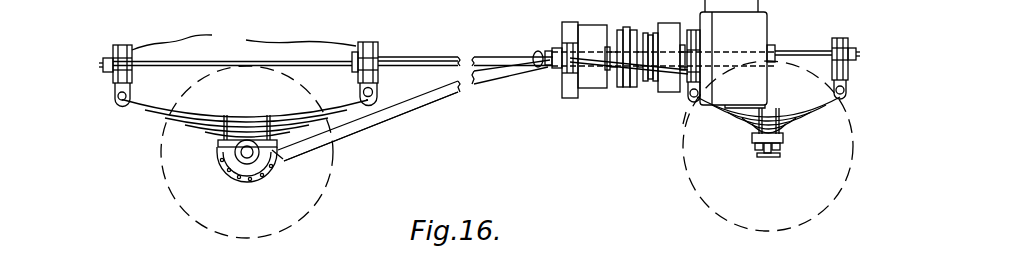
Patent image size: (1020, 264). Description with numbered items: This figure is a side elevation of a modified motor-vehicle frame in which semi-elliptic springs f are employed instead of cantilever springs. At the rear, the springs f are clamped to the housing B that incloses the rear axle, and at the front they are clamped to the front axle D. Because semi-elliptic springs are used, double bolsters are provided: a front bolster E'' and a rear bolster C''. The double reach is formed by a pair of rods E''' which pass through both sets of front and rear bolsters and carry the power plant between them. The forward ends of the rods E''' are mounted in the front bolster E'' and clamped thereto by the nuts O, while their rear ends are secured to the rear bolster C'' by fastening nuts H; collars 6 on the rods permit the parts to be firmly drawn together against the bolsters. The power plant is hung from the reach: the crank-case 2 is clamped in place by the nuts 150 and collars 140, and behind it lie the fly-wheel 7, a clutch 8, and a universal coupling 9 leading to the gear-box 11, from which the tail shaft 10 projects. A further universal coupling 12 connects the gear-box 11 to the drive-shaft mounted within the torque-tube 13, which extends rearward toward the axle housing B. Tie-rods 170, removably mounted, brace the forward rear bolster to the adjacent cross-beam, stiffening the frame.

The nuts H is at (352, 73).
The rear bolster C'' is at (244, 38).
The collars 6 is at (380, 50).
The reach rods E''' is at (465, 44).
The universal coupling 12 is at (536, 50).
The torque-tube 13 is at (388, 112).
The tie-rods 170 is at (420, 66).
The housing B is at (217, 160).
The semi-elliptic springs f is at (232, 112).
The front axle D is at (783, 153).
The nuts 150 is at (548, 75).
The tail shaft 10 is at (566, 25).
The gear-box 11 is at (591, 32).
The universal coupling 9 is at (628, 30).
The clutch 8 is at (650, 82).
The fly-wheel 7 is at (668, 33).
The collars 140 is at (609, 75).
The crank-case 2 is at (768, 95).
The front bolster E'' is at (786, 55).
The nuts O is at (845, 48).